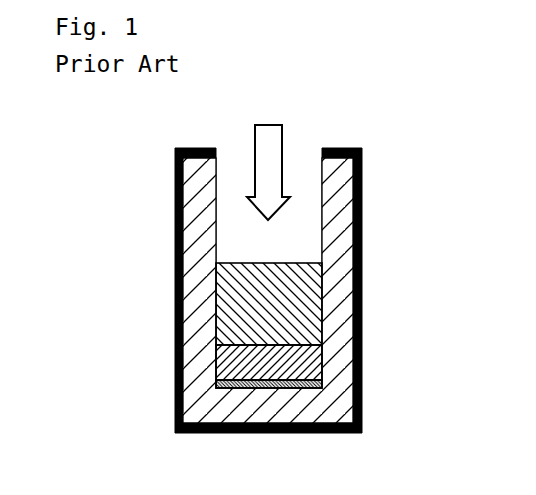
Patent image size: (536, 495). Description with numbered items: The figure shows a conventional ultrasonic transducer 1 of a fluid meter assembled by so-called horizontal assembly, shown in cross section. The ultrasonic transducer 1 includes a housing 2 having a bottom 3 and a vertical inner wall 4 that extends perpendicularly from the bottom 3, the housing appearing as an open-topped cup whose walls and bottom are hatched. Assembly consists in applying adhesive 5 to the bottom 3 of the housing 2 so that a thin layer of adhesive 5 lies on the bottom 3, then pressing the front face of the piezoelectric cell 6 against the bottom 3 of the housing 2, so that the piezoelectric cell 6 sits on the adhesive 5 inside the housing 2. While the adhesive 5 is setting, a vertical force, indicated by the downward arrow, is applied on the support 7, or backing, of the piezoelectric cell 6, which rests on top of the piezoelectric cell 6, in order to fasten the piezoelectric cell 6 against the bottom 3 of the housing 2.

The ultrasonic transducer 1 is at (151, 240).
The housing 2 is at (302, 228).
The bottom 3 is at (270, 378).
The vertical inner wall 4 is at (217, 178).
The adhesive 5 is at (280, 384).
The piezoelectric cell 6 is at (303, 365).
The support 7 is at (303, 310).